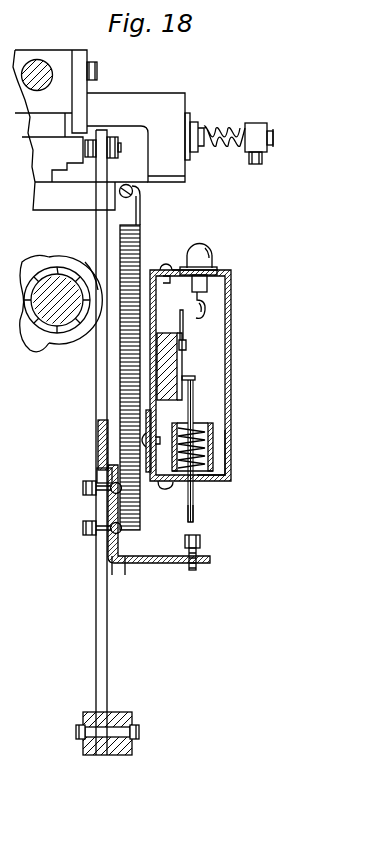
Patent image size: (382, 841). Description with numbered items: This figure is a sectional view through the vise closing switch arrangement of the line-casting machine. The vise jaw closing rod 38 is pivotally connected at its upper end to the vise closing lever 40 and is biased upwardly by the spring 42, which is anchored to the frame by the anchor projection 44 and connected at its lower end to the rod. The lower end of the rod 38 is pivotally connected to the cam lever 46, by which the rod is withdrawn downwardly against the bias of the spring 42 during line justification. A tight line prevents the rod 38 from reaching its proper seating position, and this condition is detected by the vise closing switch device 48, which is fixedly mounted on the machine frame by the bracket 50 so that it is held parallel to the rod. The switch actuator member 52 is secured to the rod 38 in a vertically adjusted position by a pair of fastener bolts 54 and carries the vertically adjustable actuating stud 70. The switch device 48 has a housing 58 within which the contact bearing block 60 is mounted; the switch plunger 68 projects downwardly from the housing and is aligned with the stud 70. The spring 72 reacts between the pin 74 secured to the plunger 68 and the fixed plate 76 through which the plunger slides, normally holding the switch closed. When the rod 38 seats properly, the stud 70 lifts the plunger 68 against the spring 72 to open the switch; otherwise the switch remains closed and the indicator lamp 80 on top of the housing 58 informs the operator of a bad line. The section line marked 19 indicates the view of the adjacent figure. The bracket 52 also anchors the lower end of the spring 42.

The section line for Fig. 19 is at (118, 465).
The vise jaw closing rod 38 is at (96, 383).
The vise closing lever 40 is at (108, 136).
The spring 42 is at (140, 250).
The anchor projection 44 is at (140, 192).
The cam lever 46 is at (116, 753).
The vise closing switch device 48 is at (233, 456).
The bracket 50 is at (150, 470).
The switch actuator member 52 is at (155, 564).
The fastener bolts 54 is at (83, 530).
The housing 58 is at (231, 357).
The contact bearing block 60 is at (160, 363).
The switch plunger 68 is at (195, 510).
The actuating stud 70 is at (200, 551).
The spring 72 is at (197, 450).
The pin 74 is at (197, 482).
The fixed plate 76 is at (197, 437).
The indicator lamp 80 is at (214, 247).